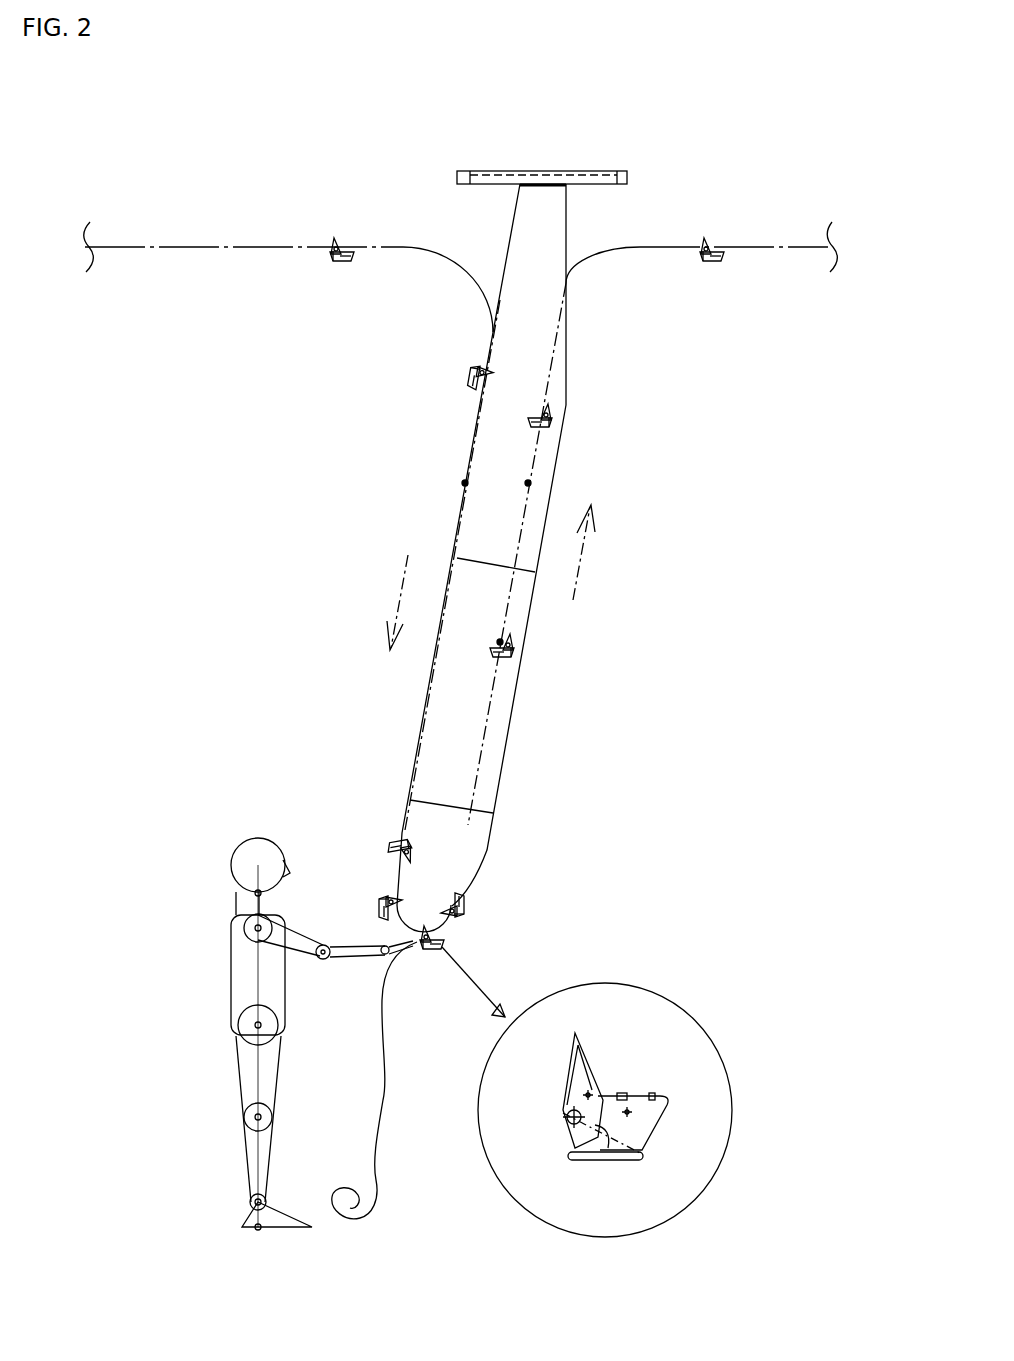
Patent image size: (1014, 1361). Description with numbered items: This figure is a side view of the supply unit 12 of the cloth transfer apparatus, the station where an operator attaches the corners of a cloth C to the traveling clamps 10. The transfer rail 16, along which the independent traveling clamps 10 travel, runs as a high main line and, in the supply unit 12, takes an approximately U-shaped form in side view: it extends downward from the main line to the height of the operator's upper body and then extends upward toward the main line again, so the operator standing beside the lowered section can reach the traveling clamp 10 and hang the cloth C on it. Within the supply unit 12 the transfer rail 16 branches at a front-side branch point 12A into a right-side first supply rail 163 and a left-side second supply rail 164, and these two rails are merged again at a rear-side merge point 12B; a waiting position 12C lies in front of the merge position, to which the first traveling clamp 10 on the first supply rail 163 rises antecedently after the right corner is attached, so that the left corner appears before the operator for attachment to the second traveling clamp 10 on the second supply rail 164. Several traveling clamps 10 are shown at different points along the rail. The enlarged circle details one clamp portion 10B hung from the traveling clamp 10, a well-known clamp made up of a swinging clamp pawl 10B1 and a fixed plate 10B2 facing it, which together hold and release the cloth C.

The traveling clamp 10 is at (342, 262).
The clamp portion 10B is at (607, 1090).
The swinging clamp pawl 10B1 is at (571, 1133).
The fixed plate 10B2 is at (600, 1162).
The supply unit 12 is at (655, 170).
The branch point 12A is at (462, 483).
The merge point 12B is at (531, 483).
The waiting position 12C is at (508, 638).
The transfer rail 16 is at (212, 244).
The first supply rail 163 is at (423, 706).
The second supply rail 164 is at (452, 565).
The cloth C is at (373, 1150).